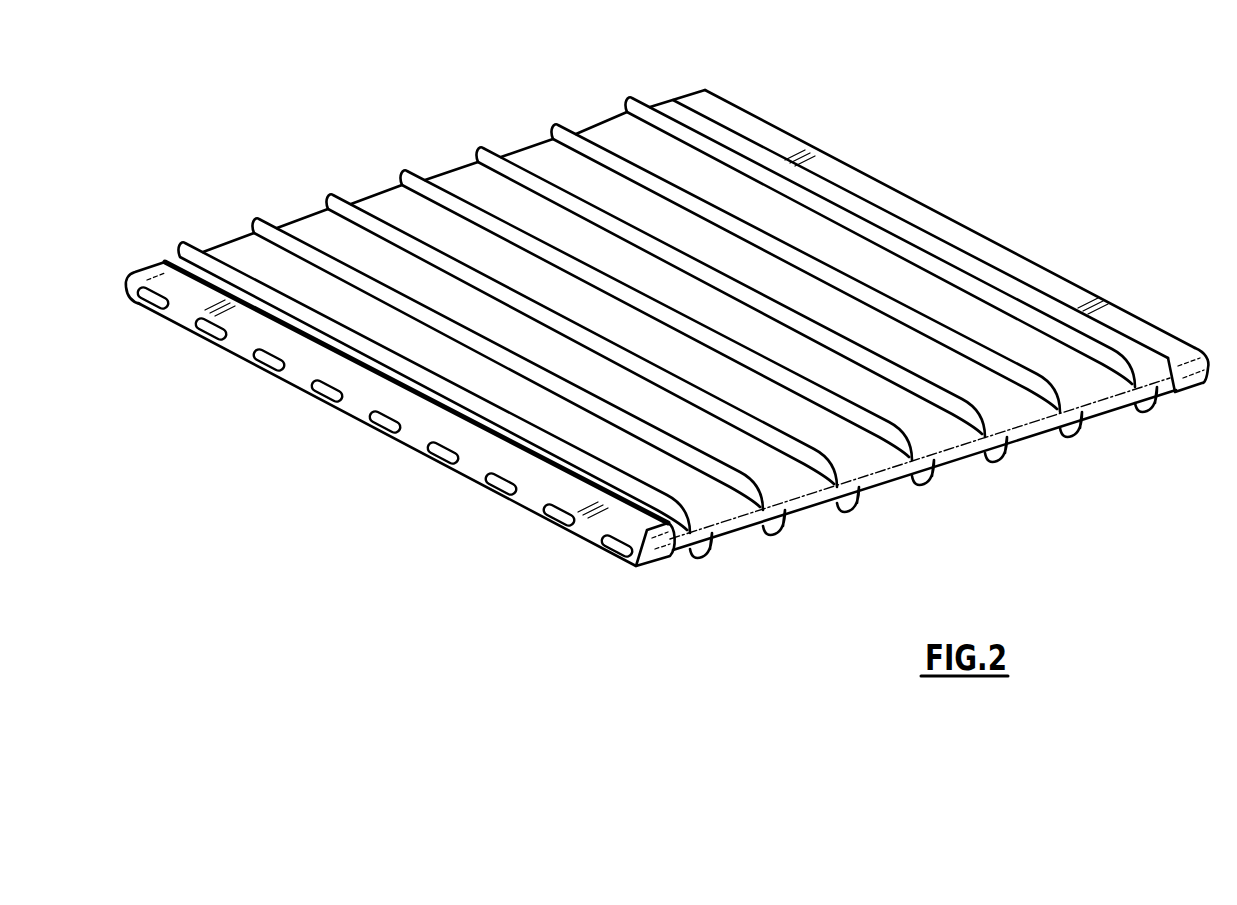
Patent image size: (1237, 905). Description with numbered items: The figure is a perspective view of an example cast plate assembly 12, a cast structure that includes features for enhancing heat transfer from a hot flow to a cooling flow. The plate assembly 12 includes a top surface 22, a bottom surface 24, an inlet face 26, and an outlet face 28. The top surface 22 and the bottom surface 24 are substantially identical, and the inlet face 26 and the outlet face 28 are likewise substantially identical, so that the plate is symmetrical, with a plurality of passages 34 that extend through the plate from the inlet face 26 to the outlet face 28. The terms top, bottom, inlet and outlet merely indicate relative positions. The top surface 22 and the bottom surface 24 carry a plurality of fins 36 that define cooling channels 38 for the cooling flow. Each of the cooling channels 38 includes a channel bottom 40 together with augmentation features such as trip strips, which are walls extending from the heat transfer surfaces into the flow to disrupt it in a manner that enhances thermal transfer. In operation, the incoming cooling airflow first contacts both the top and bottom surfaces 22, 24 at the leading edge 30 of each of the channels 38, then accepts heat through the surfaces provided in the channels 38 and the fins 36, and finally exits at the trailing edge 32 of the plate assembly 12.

The plate assembly 12 is at (1004, 64).
The top surface 22 is at (614, 167).
The bottom surface 24 is at (764, 537).
The inlet face 26 is at (411, 507).
The outlet face 28 is at (1037, 241).
The leading edge 30 is at (239, 172).
The trailing edge 32 is at (990, 525).
The passages 34 is at (322, 398).
The fins 36 is at (403, 190).
The cooling channels 38 is at (404, 198).
The channel bottom 40 is at (820, 207).